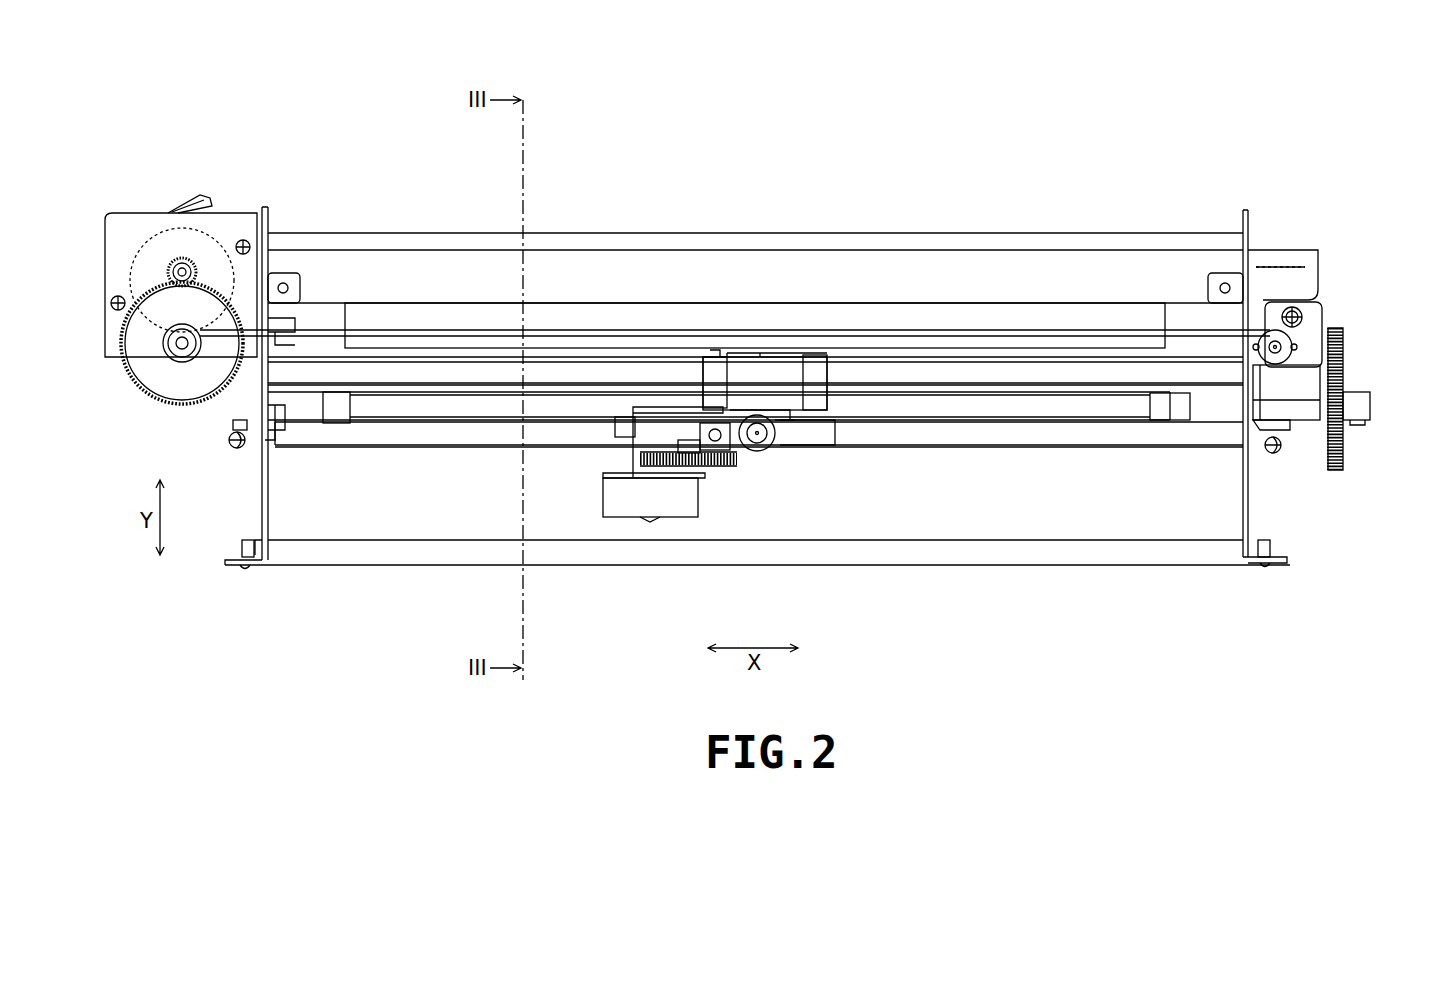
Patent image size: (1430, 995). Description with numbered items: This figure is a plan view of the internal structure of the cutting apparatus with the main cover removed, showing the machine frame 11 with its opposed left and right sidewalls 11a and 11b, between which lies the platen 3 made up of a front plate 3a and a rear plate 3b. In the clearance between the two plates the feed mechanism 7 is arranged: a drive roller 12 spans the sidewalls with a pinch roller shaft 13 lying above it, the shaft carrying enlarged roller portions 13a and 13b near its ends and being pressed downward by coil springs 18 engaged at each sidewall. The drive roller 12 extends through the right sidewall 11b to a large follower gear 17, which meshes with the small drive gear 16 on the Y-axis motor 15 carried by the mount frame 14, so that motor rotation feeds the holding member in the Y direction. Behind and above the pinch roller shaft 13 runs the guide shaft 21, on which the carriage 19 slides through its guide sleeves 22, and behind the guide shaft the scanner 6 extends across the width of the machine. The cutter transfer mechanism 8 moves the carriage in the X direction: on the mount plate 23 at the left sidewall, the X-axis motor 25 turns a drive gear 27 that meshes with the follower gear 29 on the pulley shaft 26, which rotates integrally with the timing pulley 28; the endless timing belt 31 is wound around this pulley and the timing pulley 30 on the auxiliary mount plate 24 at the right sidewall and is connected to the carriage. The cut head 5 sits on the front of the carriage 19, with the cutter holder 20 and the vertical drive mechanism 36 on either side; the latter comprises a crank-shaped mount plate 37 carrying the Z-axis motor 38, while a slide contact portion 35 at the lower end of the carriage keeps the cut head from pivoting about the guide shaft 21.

The platen 3 is at (395, 565).
The front plate 3a is at (487, 513).
The rear plate 3b is at (473, 268).
The cut head 5 is at (756, 488).
The scanner 6 is at (888, 310).
The feed mechanism 7 is at (1367, 444).
The cutter transfer mechanism 8 is at (254, 197).
The machine frame 11 is at (1217, 567).
The left sidewall 11a is at (255, 515).
The right sidewall 11b is at (1250, 520).
The drive roller 12 is at (1287, 421).
The pinch roller shaft 13 is at (1046, 410).
The roller portion 13a is at (336, 415).
The roller portion 13b is at (1173, 415).
The mount frame 14 is at (1330, 310).
The Y-axis motor 15 is at (1288, 268).
The drive gear 16 is at (1338, 330).
The follower gear 17 is at (1335, 470).
The coil spring 18 is at (235, 447).
The carriage 19 is at (763, 368).
The cutter holder 20 is at (770, 446).
The guide shaft 21 is at (1003, 378).
The guide sleeve 22 is at (708, 355).
The mount plate 23 is at (130, 210).
The auxiliary mount plate 24 is at (1293, 344).
The X-axis motor 25 is at (185, 212).
The pulley shaft 26 is at (169, 346).
The drive gear 27 is at (172, 268).
The timing pulley 28 is at (178, 375).
The follower gear 29 is at (138, 398).
The timing pulley 30 is at (1285, 352).
The timing belt 31 is at (420, 330).
The slide contact portion 35 is at (838, 432).
The vertical drive mechanism 36 is at (705, 492).
The mount plate 37 is at (640, 458).
The Z-axis motor 38 is at (625, 505).